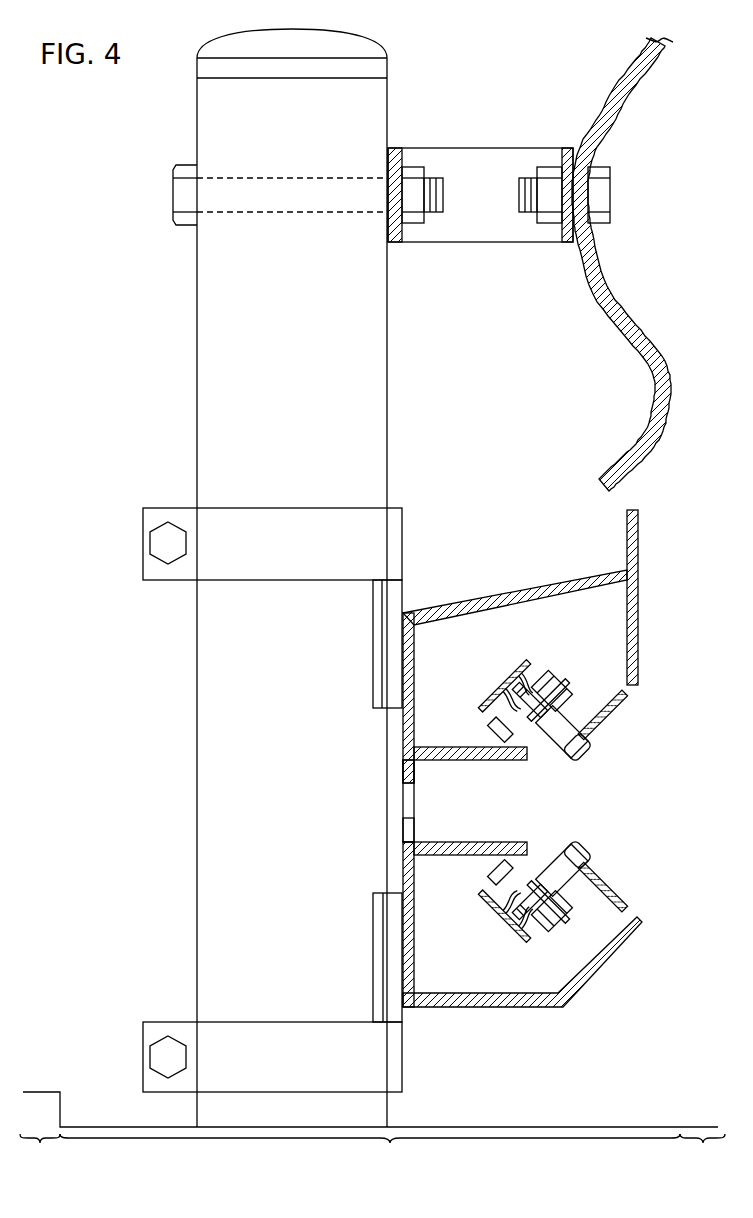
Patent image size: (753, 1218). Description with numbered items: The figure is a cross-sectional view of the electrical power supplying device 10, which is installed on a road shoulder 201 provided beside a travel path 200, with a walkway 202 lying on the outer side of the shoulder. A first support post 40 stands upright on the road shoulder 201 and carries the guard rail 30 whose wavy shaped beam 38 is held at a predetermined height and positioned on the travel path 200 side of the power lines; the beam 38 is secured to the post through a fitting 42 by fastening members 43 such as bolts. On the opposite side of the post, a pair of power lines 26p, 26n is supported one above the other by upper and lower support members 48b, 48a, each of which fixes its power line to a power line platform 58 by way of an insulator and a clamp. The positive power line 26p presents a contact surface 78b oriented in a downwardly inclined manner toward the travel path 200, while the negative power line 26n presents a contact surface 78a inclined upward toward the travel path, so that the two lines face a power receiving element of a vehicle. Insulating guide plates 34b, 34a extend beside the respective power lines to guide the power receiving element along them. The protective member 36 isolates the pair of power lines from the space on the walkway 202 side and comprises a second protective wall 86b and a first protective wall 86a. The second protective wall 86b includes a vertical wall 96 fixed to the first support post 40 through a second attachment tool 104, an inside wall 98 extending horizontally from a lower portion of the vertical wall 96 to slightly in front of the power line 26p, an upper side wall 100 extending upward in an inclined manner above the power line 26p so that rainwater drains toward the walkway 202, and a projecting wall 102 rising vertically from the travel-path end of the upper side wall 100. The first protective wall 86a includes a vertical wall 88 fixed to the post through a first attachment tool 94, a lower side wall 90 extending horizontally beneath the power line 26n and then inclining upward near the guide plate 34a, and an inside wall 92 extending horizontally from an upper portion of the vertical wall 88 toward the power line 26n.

The electrical power supplying device 10 is at (166, 87).
The guard rail 30 is at (668, 45).
The beam 38 is at (668, 387).
The first support post 40 is at (383, 38).
The fitting 42 is at (477, 152).
The fastening member 43 is at (522, 183).
The second attachment tool 104 is at (148, 523).
The first attachment tool 94 is at (148, 1035).
The vertical wall 96 is at (413, 653).
The inside wall 98 is at (452, 747).
The upper side wall 100 is at (540, 590).
The projecting wall 102 is at (636, 535).
The second protective wall 86b is at (408, 784).
The first protective wall 86a is at (408, 820).
The protective member 36 is at (468, 768).
The vertical wall 88 is at (413, 950).
The inside wall 92 is at (456, 855).
The lower side wall 90 is at (537, 1005).
The upper support member 48b is at (528, 660).
The lower support member 48a is at (528, 942).
The power line platform 58 is at (531, 681).
The power line 26p is at (558, 748).
The power line 26n is at (558, 854).
The guide plate 34b is at (612, 707).
The guide plate 34a is at (612, 895).
The contact surface 78b is at (576, 758).
The contact surface 78a is at (576, 842).
The travel path 200 is at (702, 1150).
The road shoulder 201 is at (370, 1150).
The walkway 202 is at (40, 1150).